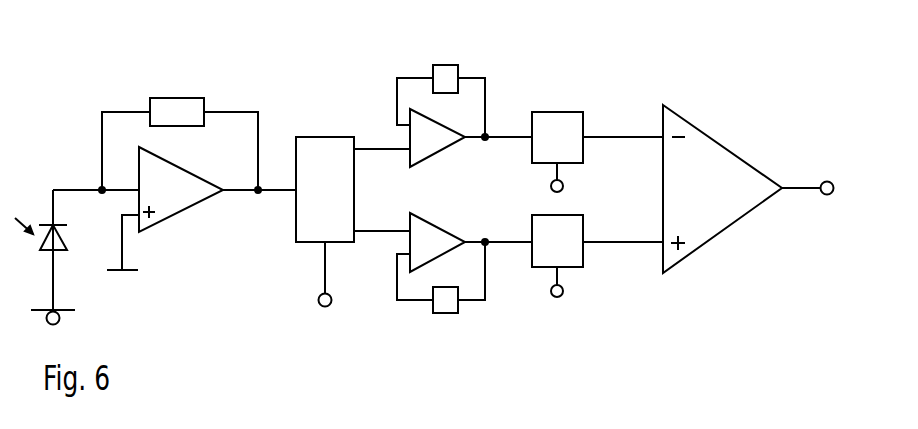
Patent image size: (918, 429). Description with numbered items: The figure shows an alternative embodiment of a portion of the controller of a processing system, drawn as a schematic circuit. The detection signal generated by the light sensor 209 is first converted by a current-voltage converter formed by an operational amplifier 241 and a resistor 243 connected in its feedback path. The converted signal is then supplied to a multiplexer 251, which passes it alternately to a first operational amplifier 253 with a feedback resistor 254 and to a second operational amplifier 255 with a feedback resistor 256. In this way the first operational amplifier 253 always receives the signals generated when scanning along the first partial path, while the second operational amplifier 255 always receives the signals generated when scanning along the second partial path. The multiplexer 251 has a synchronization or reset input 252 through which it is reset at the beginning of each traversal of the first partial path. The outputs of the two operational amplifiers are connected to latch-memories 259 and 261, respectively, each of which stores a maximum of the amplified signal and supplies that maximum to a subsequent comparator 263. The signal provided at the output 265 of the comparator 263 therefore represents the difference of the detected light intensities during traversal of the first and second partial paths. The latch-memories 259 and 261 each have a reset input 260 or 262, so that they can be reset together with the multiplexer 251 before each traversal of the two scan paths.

The light sensor 209 is at (67, 240).
The operational amplifier 241 is at (192, 208).
The resistor 243 is at (177, 98).
The multiplexer 251 is at (325, 137).
The reset input 252 is at (325, 308).
The first operational amplifier 253 is at (440, 153).
The feedback resistor 254 is at (446, 65).
The second operational amplifier 255 is at (440, 227).
The feedback resistor 256 is at (446, 313).
The latch-memory 259 is at (560, 112).
The reset input 260 is at (563, 186).
The latch-memory 261 is at (543, 267).
The reset input 262 is at (563, 291).
The comparator 263 is at (707, 132).
The output 265 is at (825, 175).